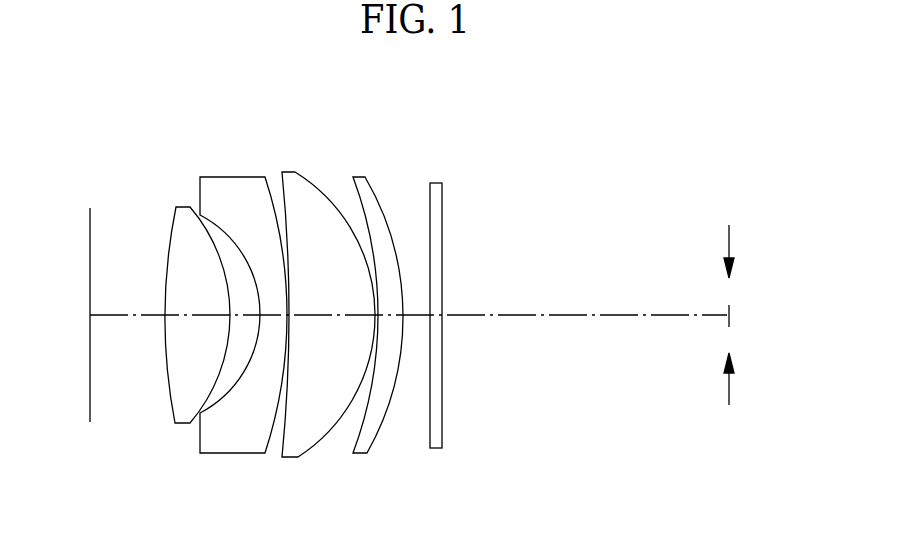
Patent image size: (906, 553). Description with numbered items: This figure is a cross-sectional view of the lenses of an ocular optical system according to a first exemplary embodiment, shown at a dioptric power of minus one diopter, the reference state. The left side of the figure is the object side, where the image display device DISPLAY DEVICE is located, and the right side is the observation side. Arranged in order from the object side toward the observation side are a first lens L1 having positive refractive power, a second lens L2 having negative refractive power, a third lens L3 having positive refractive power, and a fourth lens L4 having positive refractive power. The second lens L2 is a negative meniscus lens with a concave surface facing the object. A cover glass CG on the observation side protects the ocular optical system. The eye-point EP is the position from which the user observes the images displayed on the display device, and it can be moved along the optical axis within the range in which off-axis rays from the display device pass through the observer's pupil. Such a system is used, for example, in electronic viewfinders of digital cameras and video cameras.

The image display device DISPLAY DEVICE is at (98, 215).
The first lens L1 is at (183, 206).
The second lens L2 is at (237, 176).
The third lens L3 is at (296, 171).
The fourth lens L4 is at (366, 176).
The cover glass CG is at (442, 182).
The eye-point EP is at (745, 315).